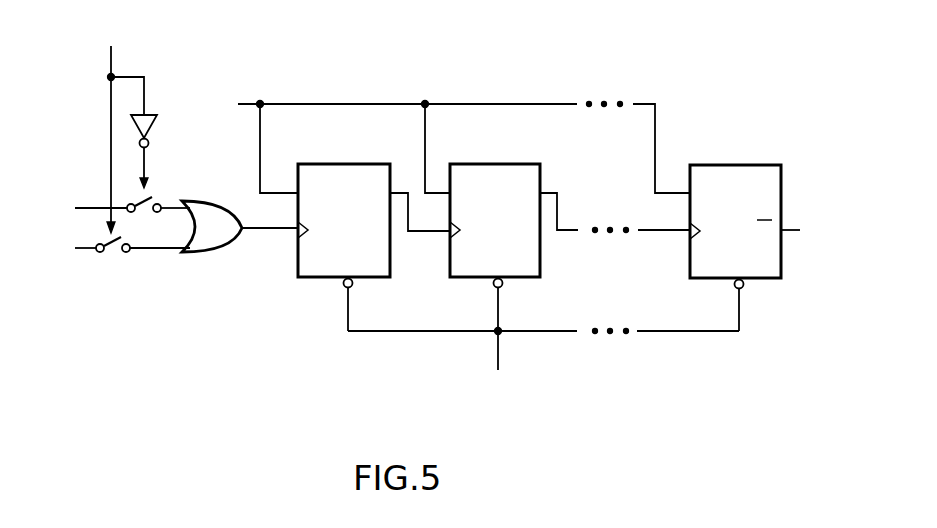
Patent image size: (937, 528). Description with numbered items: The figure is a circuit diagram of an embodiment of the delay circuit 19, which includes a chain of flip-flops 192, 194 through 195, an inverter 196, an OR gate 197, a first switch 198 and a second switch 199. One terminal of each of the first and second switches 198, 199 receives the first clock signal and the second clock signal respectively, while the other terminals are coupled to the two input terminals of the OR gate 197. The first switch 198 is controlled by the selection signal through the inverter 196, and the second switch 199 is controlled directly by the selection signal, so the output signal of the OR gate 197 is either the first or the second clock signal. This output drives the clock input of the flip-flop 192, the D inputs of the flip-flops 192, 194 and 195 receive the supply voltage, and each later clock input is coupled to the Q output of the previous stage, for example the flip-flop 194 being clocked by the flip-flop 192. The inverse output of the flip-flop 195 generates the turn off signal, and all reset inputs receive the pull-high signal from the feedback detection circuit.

The delay circuit 19 is at (705, 36).
The flip-flop 192 is at (335, 162).
The flip-flop 194 is at (497, 162).
The flip-flop 195 is at (745, 164).
The inverter 196 is at (150, 112).
The OR gate 197 is at (213, 199).
The first switch 198 is at (152, 192).
The second switch 199 is at (115, 256).